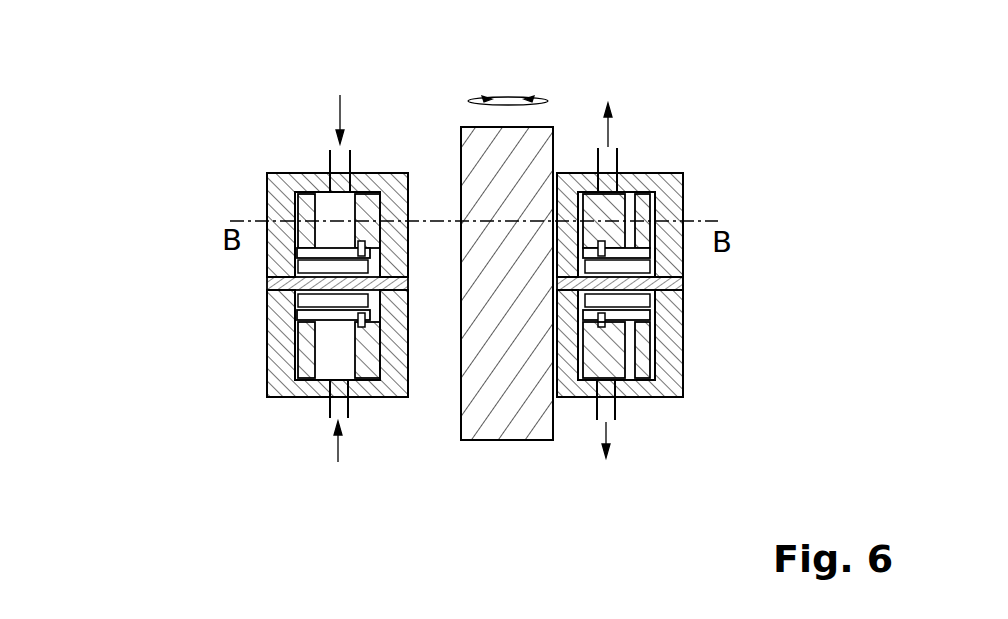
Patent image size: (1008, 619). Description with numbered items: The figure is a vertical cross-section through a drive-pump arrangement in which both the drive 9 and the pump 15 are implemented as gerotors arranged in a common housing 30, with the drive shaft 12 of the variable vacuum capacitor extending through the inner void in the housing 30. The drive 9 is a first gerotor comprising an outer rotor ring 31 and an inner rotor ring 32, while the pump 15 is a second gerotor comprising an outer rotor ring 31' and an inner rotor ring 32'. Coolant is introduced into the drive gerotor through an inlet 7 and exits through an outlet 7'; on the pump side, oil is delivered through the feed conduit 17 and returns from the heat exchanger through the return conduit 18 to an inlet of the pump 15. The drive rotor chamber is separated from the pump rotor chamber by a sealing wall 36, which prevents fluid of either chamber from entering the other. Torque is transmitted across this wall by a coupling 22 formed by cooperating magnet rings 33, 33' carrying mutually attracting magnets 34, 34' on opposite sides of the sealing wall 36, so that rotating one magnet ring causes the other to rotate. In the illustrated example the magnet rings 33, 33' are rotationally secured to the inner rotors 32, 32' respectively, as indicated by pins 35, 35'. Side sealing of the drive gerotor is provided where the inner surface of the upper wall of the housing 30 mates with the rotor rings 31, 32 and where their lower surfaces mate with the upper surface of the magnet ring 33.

The inlet 7 is at (307, 96).
The outlet 7' is at (638, 111).
The drive 9 is at (717, 251).
The drive shaft 12 is at (507, 140).
The pump 15 is at (750, 357).
The feed conduit 17 is at (617, 412).
The return conduit 18 is at (327, 407).
The coupling 22 is at (747, 285).
The housing 30 is at (238, 258).
The outer rotor ring 31 is at (240, 184).
The outer rotor ring 31' is at (232, 375).
The inner rotor ring 32 is at (346, 138).
The inner rotor ring 32' is at (227, 418).
The magnet ring 33 is at (214, 223).
The magnet ring 33' is at (204, 342).
The magnets 34 is at (206, 267).
The magnets 34' is at (203, 314).
The pin 35 is at (398, 168).
The pin 35' is at (387, 415).
The sealing wall 36 is at (647, 285).